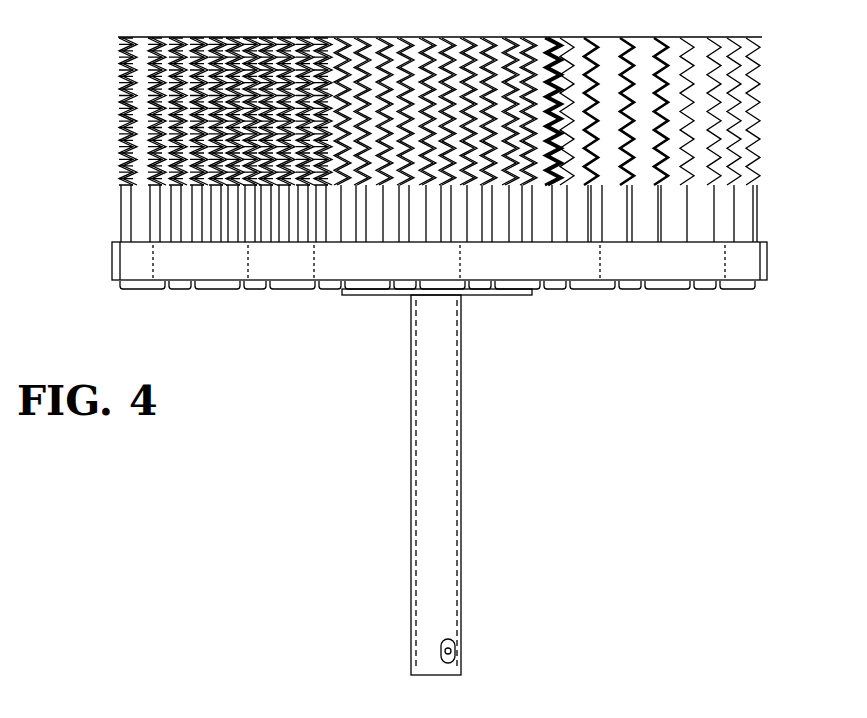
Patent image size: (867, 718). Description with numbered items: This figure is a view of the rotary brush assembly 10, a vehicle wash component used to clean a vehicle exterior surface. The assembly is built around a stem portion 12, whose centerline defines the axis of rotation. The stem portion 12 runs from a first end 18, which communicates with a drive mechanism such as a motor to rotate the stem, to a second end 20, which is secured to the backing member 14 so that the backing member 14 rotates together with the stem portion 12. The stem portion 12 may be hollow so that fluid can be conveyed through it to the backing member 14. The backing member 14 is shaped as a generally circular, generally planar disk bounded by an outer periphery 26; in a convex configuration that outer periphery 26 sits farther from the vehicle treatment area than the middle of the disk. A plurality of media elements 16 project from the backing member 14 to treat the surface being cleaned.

The rotary brush assembly 10 is at (152, 296).
The stem portion 12 is at (425, 477).
The backing member 14 is at (748, 260).
The media elements 16 is at (570, 37).
The first end 18 is at (447, 668).
The second end 20 is at (463, 298).
The outer periphery 26 is at (314, 253).